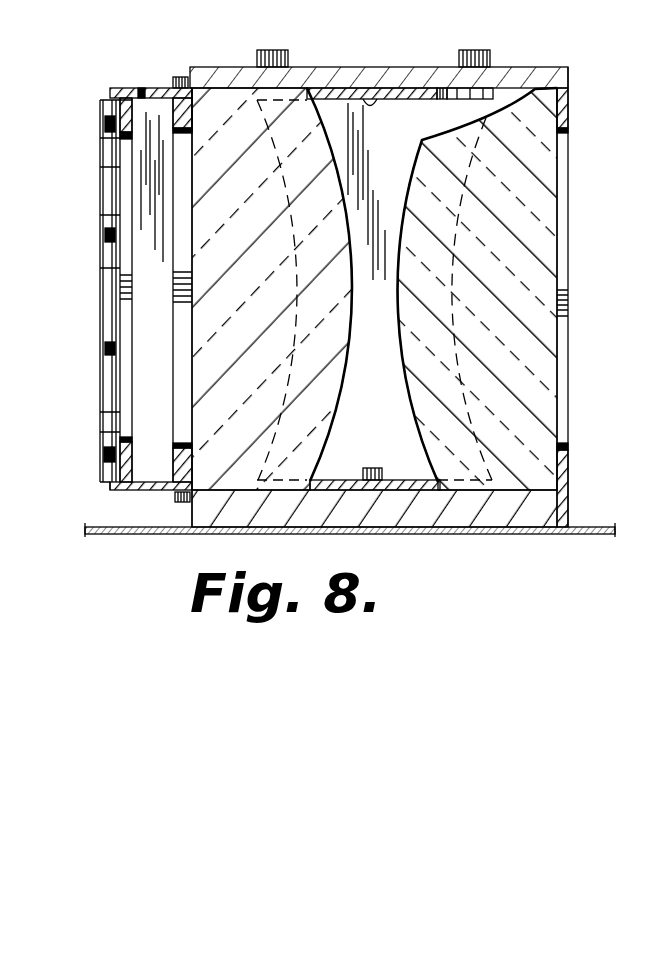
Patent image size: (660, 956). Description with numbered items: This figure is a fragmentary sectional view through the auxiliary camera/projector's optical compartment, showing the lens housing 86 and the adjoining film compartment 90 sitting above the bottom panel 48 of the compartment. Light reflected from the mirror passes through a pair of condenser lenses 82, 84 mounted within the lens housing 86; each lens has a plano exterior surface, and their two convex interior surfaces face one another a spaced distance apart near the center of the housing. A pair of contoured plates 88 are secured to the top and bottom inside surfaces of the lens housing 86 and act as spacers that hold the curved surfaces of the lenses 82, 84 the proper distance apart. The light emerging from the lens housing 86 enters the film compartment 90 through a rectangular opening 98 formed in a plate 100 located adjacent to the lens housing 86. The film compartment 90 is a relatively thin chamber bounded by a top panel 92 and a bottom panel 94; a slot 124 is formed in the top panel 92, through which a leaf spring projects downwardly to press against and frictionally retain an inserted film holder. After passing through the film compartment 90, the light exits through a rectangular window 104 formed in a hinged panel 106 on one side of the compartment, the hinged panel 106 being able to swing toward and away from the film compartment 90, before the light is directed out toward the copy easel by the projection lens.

The bottom panel 48 is at (593, 536).
The condenser lens 82 is at (543, 240).
The condenser lens 84 is at (327, 309).
The lens housing 86 is at (423, 512).
The contoured plate 88 is at (430, 99).
The film compartment 90 is at (166, 331).
The top panel 92 is at (118, 88).
The bottom panel 94 is at (143, 490).
The rectangular opening 98 is at (190, 392).
The plate 100 is at (184, 468).
The rectangular window 104 is at (125, 364).
The hinged panel 106 is at (125, 490).
The slot 124 is at (149, 92).